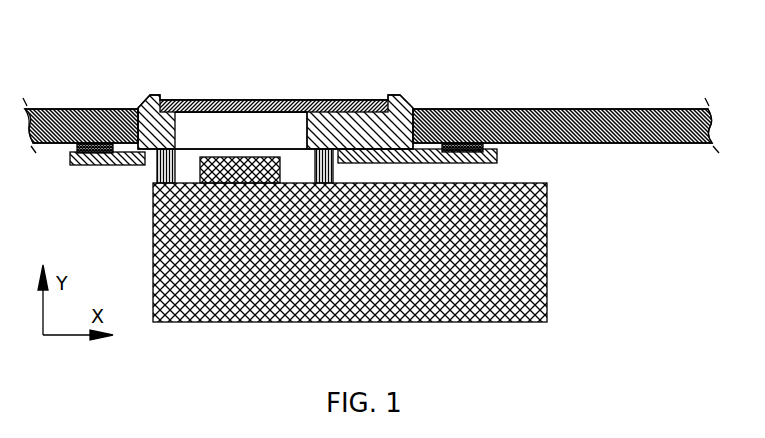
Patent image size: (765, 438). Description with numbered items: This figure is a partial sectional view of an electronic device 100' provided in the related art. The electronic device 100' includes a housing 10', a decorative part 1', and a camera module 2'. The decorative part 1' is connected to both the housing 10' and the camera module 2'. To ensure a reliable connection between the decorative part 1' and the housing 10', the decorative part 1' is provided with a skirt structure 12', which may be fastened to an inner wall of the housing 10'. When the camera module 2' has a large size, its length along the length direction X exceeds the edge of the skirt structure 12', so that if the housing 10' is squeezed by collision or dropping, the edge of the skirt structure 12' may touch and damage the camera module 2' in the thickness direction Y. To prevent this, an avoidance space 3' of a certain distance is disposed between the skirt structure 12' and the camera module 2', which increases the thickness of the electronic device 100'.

The electronic device 100' is at (371, 173).
The housing 10' is at (371, 115).
The decorative part 1' is at (296, 126).
The skirt structure 12' is at (348, 156).
The avoidance space 3' is at (329, 168).
The camera module 2' is at (376, 252).